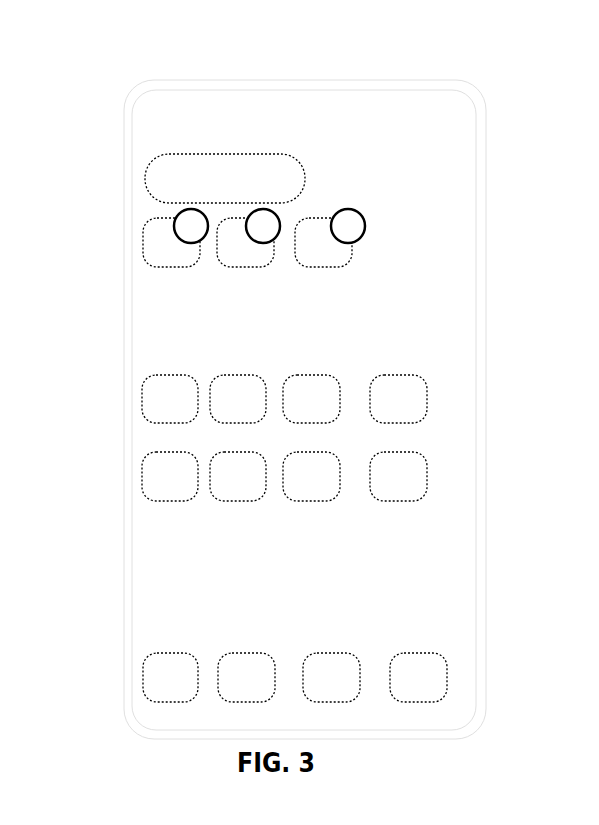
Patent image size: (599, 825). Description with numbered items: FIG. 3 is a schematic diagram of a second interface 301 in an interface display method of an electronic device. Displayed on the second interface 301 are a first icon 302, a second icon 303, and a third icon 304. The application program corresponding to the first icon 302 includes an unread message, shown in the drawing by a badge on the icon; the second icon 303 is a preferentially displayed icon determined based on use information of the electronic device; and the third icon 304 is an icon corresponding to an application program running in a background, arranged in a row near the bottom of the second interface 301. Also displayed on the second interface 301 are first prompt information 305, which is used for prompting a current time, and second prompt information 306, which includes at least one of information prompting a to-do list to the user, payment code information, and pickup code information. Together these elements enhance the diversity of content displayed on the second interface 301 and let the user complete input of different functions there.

The second interface 301 is at (360, 105).
The first icon 302 is at (157, 244).
The second icon 303 is at (163, 393).
The third icon 304 is at (152, 679).
The first prompt information 305 is at (165, 122).
The second prompt information 306 is at (160, 182).